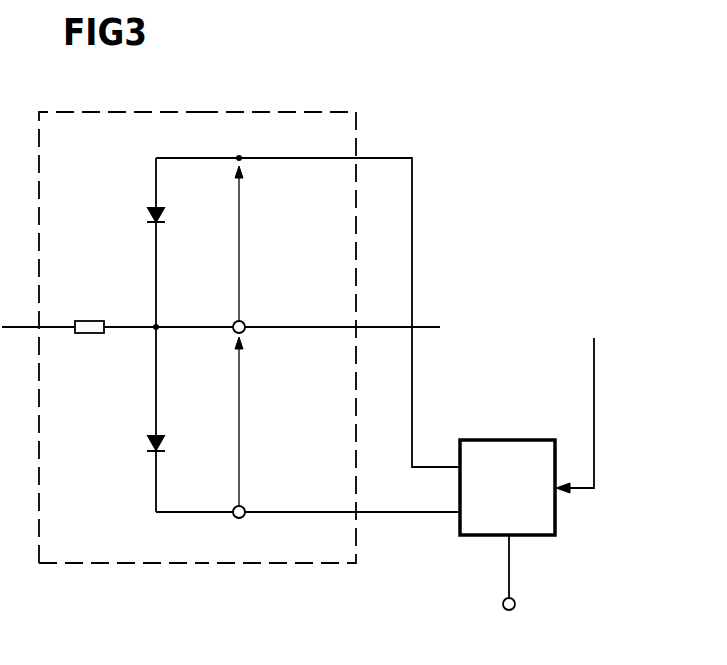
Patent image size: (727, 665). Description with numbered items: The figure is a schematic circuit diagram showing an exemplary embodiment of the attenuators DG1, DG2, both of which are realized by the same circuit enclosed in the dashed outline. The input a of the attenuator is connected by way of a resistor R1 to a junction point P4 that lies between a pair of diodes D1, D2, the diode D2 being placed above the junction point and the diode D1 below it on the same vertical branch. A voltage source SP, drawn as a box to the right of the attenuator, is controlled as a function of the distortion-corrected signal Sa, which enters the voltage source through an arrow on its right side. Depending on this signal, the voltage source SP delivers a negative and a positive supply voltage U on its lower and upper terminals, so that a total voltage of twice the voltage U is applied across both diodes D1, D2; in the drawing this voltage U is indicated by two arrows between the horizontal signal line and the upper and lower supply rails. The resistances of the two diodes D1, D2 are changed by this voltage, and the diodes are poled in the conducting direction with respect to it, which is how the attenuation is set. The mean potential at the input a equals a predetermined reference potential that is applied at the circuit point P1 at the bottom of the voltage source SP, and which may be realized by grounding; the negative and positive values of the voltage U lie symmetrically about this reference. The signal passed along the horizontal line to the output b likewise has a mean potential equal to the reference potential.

The attenuator DG1 is at (119, 321).
The attenuator DG2 is at (278, 321).
The resistor R1 is at (115, 311).
The junction point P4 is at (193, 344).
The diode D1 is at (145, 419).
The diode D2 is at (143, 242).
The voltage U is at (245, 342).
The voltage source SP is at (487, 493).
The distortion-corrected signal Sa is at (581, 399).
The circuit point P1 is at (523, 581).
The input a is at (38, 341).
The output b is at (342, 342).